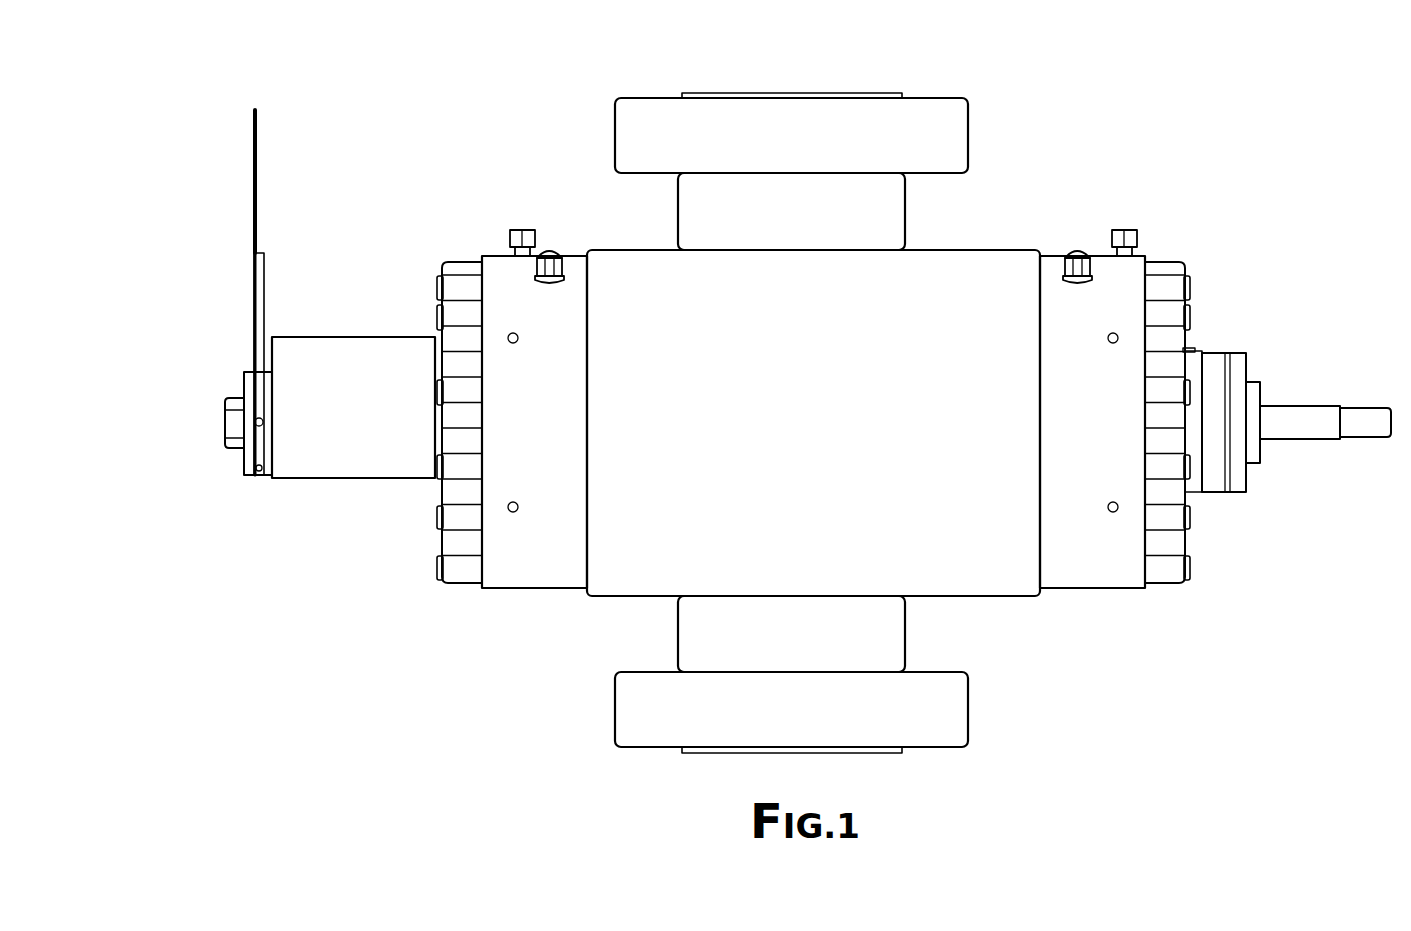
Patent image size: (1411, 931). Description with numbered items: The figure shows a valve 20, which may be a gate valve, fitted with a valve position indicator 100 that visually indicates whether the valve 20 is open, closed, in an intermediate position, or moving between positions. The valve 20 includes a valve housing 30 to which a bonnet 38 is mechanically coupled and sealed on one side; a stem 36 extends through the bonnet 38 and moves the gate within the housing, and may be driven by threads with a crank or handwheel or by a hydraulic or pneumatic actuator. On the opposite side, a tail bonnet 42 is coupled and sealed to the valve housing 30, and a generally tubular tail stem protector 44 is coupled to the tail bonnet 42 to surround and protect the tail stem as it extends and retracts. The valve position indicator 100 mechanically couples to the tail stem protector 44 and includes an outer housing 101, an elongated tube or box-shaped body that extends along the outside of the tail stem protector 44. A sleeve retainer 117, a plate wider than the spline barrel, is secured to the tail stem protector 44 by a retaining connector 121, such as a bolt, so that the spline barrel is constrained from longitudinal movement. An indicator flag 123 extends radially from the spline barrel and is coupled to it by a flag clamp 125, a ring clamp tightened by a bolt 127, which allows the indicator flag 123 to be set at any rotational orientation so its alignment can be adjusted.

The valve 20 is at (1124, 108).
The valve housing 30 is at (985, 596).
The tail bonnet 42 is at (512, 588).
The bonnet 38 is at (1098, 590).
The tail stem protector 44 is at (452, 422).
The stem 36 is at (1305, 440).
The valve position indicator 100 is at (233, 575).
The outer housing 101 is at (331, 478).
The indicator flag 123 is at (255, 168).
The flag clamp 125 is at (244, 390).
The retaining connector 121 is at (227, 422).
The sleeve retainer 117 is at (244, 462).
The bolt 127 is at (258, 476).